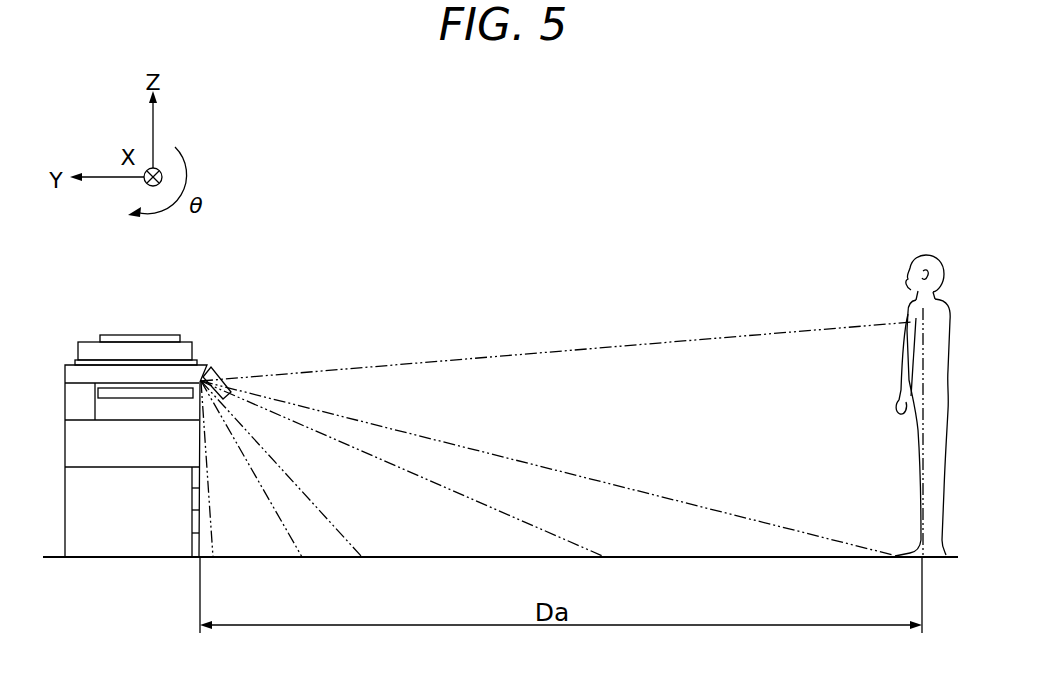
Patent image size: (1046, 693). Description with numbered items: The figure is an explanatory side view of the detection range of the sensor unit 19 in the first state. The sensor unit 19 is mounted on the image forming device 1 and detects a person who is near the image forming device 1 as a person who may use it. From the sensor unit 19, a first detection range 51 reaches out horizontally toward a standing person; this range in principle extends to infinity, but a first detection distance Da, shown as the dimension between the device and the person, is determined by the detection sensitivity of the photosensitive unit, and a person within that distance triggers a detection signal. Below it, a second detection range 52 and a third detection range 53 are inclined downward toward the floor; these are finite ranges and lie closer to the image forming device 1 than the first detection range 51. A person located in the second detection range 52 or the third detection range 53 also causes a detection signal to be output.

The image forming device 1 is at (196, 329).
The sensor unit 19 is at (188, 371).
The first detection range 51 is at (596, 348).
The second detection range 52 is at (477, 500).
The third detection range 53 is at (201, 518).